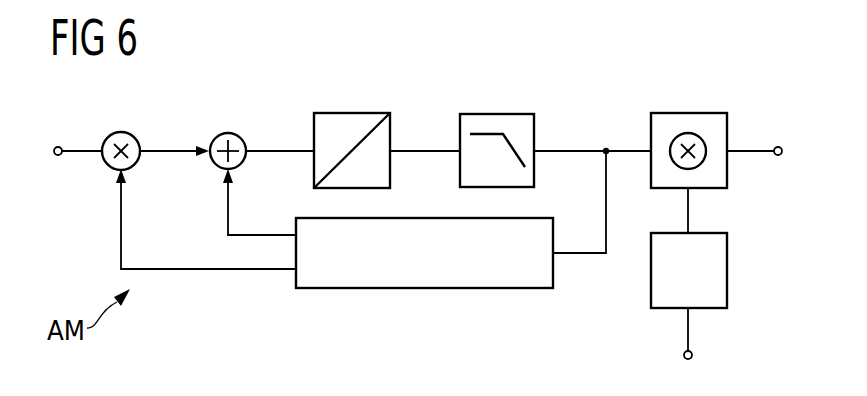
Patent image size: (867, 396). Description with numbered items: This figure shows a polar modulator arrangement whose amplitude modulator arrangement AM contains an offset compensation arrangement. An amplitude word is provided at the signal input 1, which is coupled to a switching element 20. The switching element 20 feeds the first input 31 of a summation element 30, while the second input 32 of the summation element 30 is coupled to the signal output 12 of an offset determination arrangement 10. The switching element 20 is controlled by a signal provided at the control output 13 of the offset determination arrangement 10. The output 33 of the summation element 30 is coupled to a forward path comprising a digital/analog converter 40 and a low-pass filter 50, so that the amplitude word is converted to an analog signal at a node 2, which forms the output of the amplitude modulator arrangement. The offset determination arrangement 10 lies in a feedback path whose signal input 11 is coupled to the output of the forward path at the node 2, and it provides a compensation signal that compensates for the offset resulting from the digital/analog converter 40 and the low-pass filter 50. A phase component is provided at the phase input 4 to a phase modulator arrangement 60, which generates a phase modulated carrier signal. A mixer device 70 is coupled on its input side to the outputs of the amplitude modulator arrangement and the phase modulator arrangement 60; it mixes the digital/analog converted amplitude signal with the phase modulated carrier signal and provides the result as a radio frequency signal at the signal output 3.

The signal input 1 is at (58, 146).
The node 2 is at (606, 147).
The signal output 3 is at (779, 147).
The phase input 4 is at (692, 353).
The offset determination arrangement 10 is at (426, 289).
The signal input 11 is at (556, 243).
The signal output 12 is at (296, 219).
The control output 13 is at (293, 276).
The switching element 20 is at (121, 132).
The summation element 30 is at (228, 133).
The first input 31 is at (207, 144).
The second input 32 is at (222, 175).
The output 33 is at (248, 141).
The digital/analog converter 40 is at (352, 113).
The low-pass filter 50 is at (497, 114).
The phase modulator arrangement 60 is at (727, 270).
The mixer device 70 is at (688, 113).